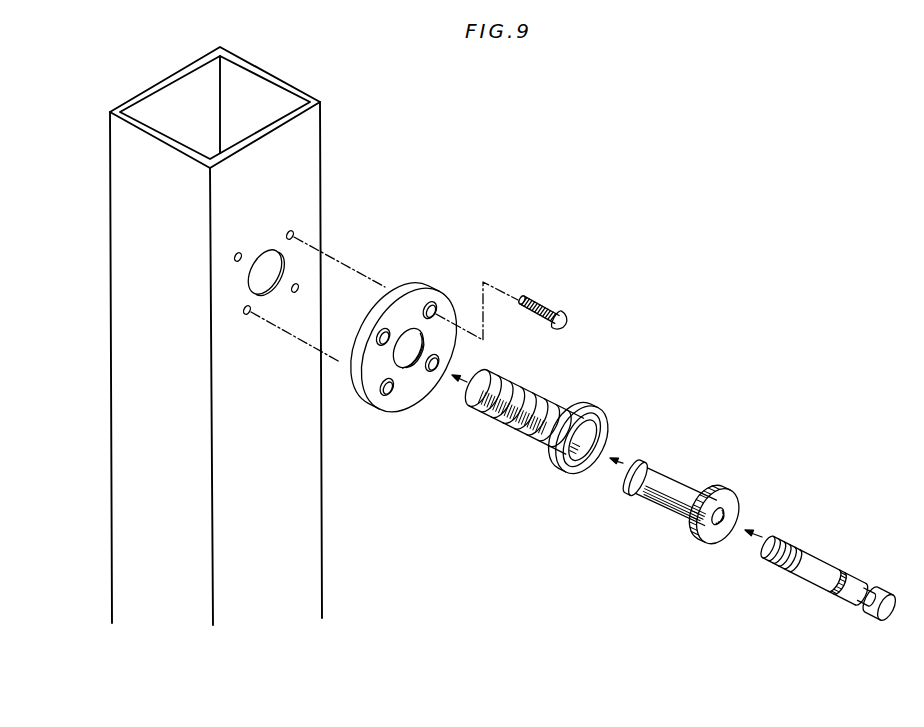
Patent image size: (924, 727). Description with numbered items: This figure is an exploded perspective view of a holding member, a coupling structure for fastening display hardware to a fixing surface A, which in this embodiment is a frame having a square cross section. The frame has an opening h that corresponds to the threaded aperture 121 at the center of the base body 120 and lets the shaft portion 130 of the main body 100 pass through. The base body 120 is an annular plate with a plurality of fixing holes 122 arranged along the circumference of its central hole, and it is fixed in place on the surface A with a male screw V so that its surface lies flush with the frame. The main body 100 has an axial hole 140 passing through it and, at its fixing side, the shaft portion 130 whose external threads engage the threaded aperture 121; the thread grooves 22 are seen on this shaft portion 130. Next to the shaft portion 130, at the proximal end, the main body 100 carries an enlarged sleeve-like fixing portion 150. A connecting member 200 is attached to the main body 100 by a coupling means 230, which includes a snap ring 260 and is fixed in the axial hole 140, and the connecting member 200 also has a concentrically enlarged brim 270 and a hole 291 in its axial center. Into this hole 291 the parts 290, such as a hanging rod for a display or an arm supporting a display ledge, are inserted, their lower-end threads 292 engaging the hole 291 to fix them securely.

The fixing surface A is at (313, 145).
The opening h is at (260, 278).
The base body 120 is at (409, 341).
The threaded aperture 121 is at (413, 363).
The fixing holes 122 is at (433, 303).
The male screw V is at (550, 307).
The main body 100 is at (544, 424).
The shaft portion 130 is at (517, 385).
The thread grooves 22 is at (498, 425).
The fixing portion 150 is at (607, 418).
The axial hole 140 is at (578, 472).
The connecting member 200 is at (737, 413).
The coupling means 230 is at (690, 504).
The snap ring 260 is at (632, 498).
The brim 270 is at (735, 500).
The hole 291 is at (720, 527).
The parts 290 is at (840, 548).
The threads 292 is at (790, 545).